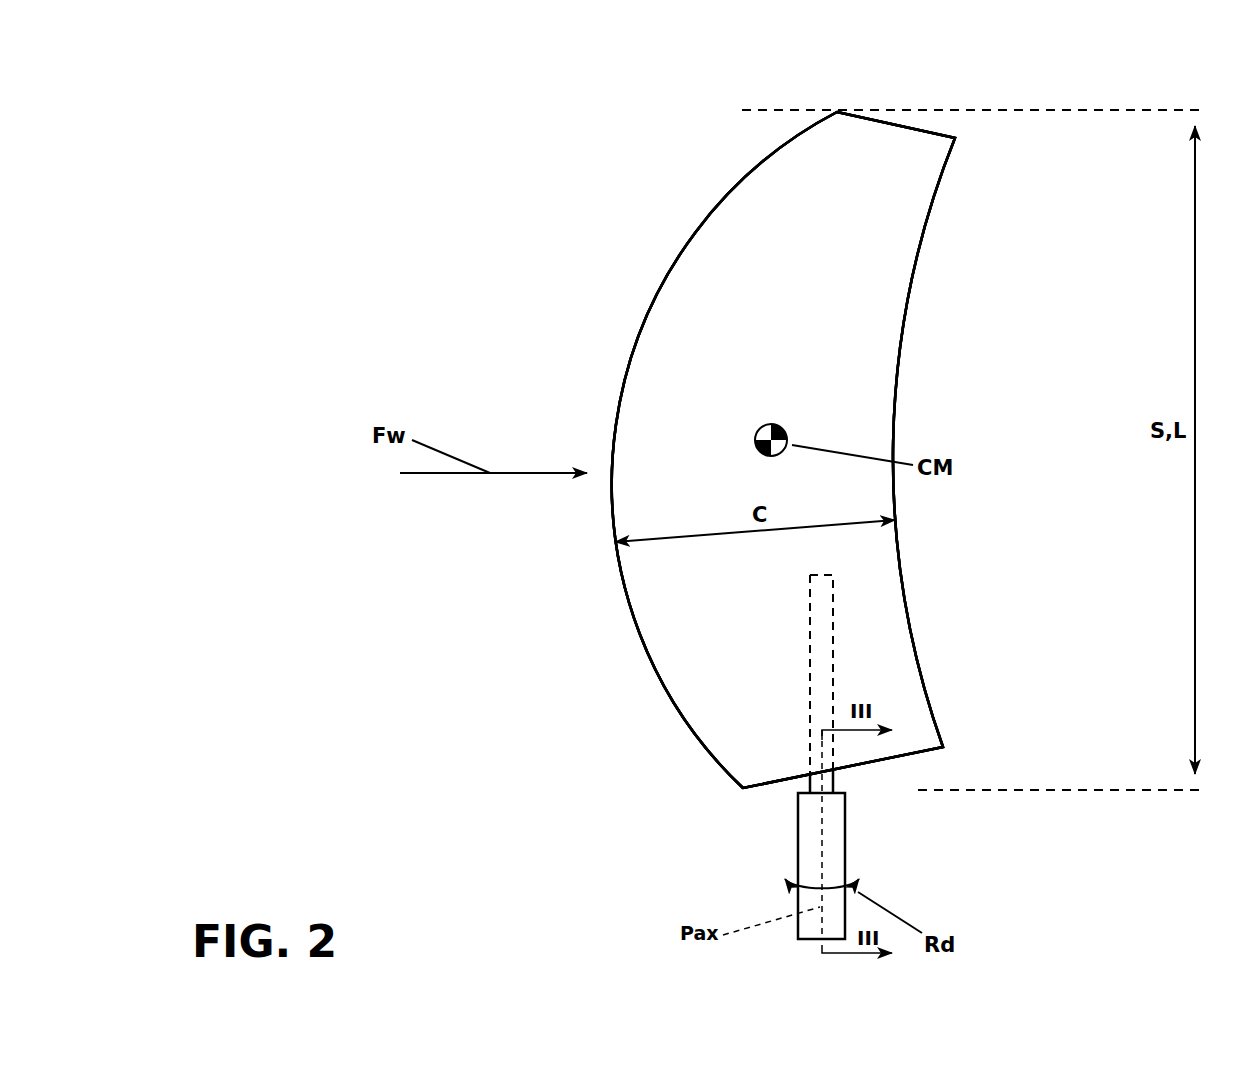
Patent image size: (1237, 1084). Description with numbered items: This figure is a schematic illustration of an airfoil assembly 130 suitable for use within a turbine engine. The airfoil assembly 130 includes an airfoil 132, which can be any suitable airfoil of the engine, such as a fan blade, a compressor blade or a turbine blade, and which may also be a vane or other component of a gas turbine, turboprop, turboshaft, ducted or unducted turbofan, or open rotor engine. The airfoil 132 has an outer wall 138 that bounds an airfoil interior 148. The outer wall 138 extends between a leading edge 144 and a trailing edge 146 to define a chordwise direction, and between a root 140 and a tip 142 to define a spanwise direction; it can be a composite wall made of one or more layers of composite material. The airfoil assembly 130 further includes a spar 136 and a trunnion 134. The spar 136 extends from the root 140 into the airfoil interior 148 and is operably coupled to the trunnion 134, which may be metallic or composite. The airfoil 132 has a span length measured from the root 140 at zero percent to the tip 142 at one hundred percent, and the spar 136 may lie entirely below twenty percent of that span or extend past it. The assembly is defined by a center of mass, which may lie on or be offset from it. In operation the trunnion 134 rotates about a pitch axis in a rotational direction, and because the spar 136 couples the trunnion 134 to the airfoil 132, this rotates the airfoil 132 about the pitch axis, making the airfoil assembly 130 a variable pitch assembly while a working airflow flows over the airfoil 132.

The airfoil assembly 130 is at (362, 190).
The airfoil 132 is at (622, 393).
The trunnion 134 is at (850, 824).
The spar 136 is at (833, 678).
The outer wall 138 is at (785, 212).
The root 140 is at (757, 791).
The tip 142 is at (922, 130).
The leading edge 144 is at (683, 255).
The trailing edge 146 is at (917, 273).
The airfoil interior 148 is at (870, 603).